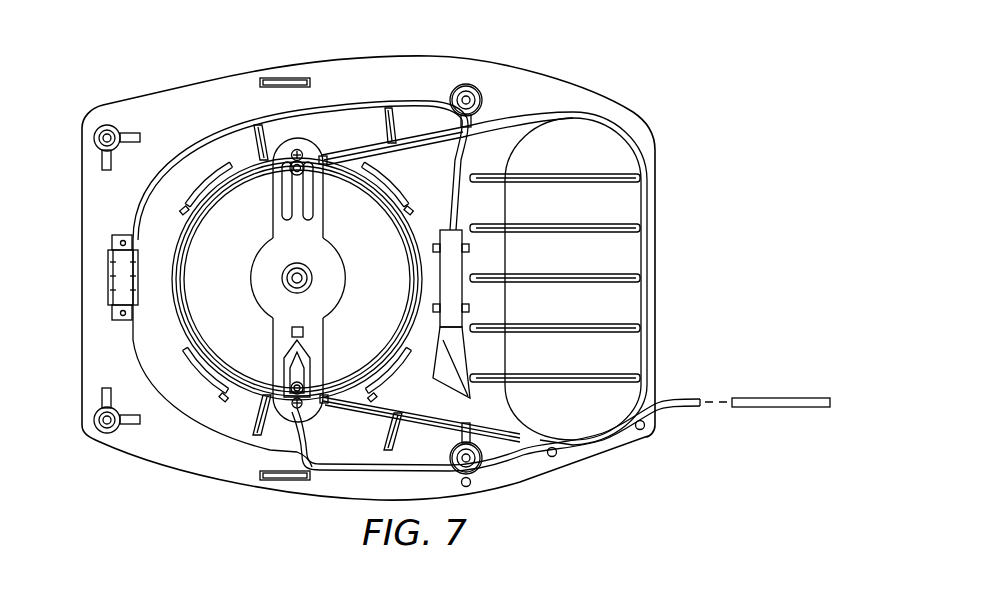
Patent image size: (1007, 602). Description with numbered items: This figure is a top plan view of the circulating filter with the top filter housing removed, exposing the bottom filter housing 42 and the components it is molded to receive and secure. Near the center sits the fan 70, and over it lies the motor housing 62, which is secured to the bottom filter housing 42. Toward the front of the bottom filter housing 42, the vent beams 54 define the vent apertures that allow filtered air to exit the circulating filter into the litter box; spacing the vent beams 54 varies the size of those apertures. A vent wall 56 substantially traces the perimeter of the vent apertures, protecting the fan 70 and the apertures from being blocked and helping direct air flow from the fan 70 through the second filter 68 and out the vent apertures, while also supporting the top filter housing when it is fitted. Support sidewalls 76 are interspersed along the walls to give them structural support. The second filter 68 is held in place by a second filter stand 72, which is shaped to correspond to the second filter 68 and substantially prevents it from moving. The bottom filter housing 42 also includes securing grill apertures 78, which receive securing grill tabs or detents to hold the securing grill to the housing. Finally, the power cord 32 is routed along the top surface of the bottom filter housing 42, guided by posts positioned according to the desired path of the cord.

The bottom filter housing 42 is at (537, 78).
The second filter 68 is at (435, 103).
The vent wall 56 is at (647, 155).
The vent beams 54 is at (624, 229).
The motor housing 62 is at (330, 258).
The second filter stand 72 is at (475, 248).
The fan 70 is at (403, 298).
The securing grill apertures 78 is at (392, 386).
The support sidewalls 76 is at (258, 425).
The power cord 32 is at (684, 398).